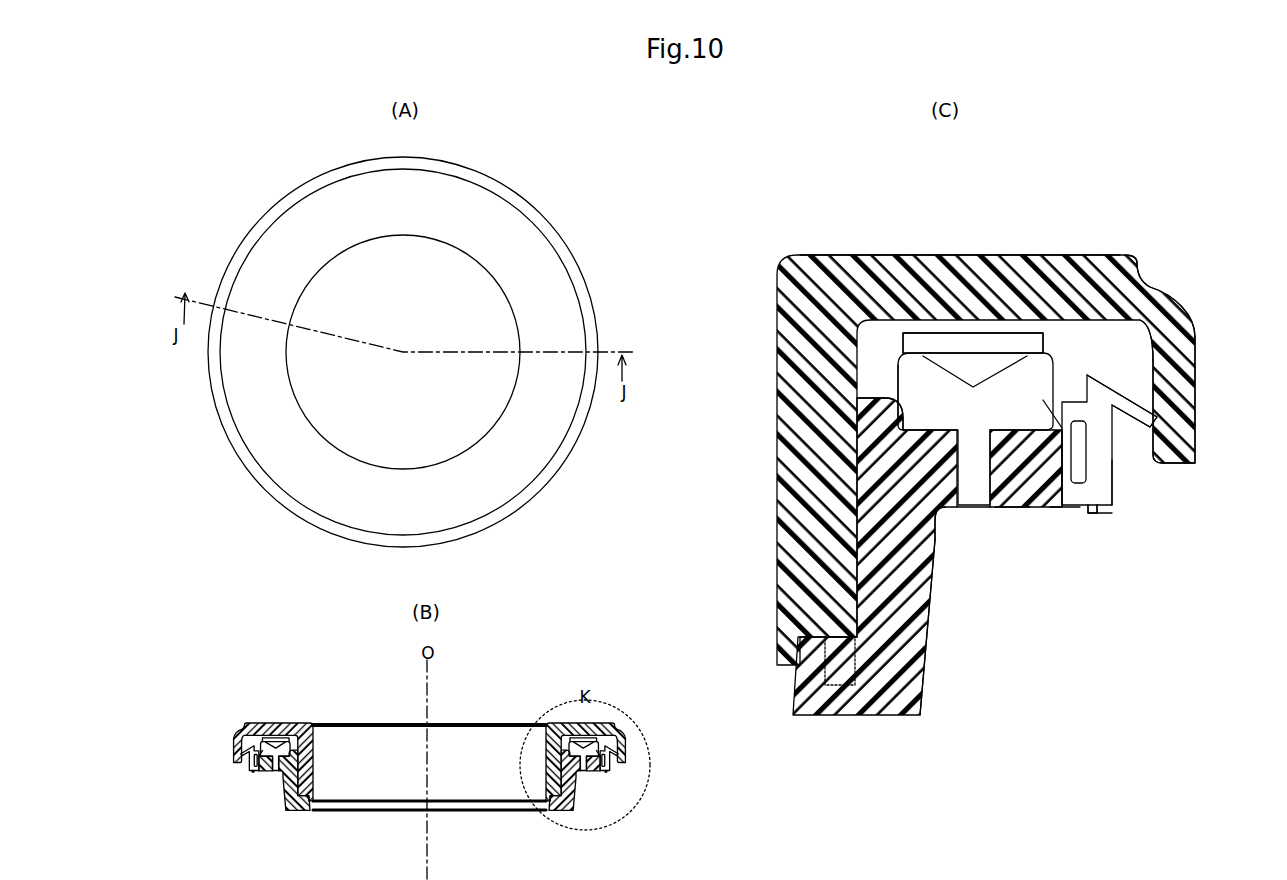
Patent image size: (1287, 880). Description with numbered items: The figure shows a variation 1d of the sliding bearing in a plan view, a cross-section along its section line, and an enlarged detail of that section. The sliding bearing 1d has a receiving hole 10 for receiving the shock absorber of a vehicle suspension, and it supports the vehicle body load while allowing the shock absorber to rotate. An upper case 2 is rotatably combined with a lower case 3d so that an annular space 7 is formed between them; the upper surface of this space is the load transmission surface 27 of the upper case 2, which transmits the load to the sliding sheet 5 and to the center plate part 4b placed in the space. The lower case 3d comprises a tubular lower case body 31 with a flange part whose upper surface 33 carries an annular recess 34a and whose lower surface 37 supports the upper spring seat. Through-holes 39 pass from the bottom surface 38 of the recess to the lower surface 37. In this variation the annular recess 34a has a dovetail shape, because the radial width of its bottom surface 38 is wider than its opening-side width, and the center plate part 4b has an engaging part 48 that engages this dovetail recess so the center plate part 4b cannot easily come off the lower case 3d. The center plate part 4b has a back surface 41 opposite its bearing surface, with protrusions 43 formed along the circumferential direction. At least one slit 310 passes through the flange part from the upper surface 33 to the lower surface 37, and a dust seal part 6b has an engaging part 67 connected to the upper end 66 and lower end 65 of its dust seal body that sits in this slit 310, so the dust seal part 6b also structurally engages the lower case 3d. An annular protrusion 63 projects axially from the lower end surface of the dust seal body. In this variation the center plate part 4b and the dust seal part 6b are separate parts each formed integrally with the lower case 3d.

The sliding bearing (variation) 1d is at (588, 140).
The upper case 2 is at (445, 203).
The receiving hole 10 is at (488, 318).
The lower case 3d is at (415, 812).
The sliding sheet 5 is at (283, 748).
The load transmission surface 27 is at (982, 330).
The engaging part 67 is at (1088, 463).
The upper end 66 is at (1088, 388).
The upper surface 33 is at (1057, 392).
The engaging part 48 is at (1150, 437).
The annular space 7 is at (1138, 283).
The annular recess 34a is at (862, 257).
The center plate part 4b is at (897, 378).
The bottom surface 38 is at (903, 400).
The dust seal part 6b is at (1112, 493).
The lower end 65 is at (1108, 517).
The annular protrusion 63 is at (1068, 432).
The protrusions 43 is at (1010, 508).
The lower surface 37 is at (1072, 521).
The slit 310 is at (1110, 524).
The through-holes 39 is at (986, 518).
The back surface 41 is at (937, 527).
The lower case body 31 is at (935, 652).